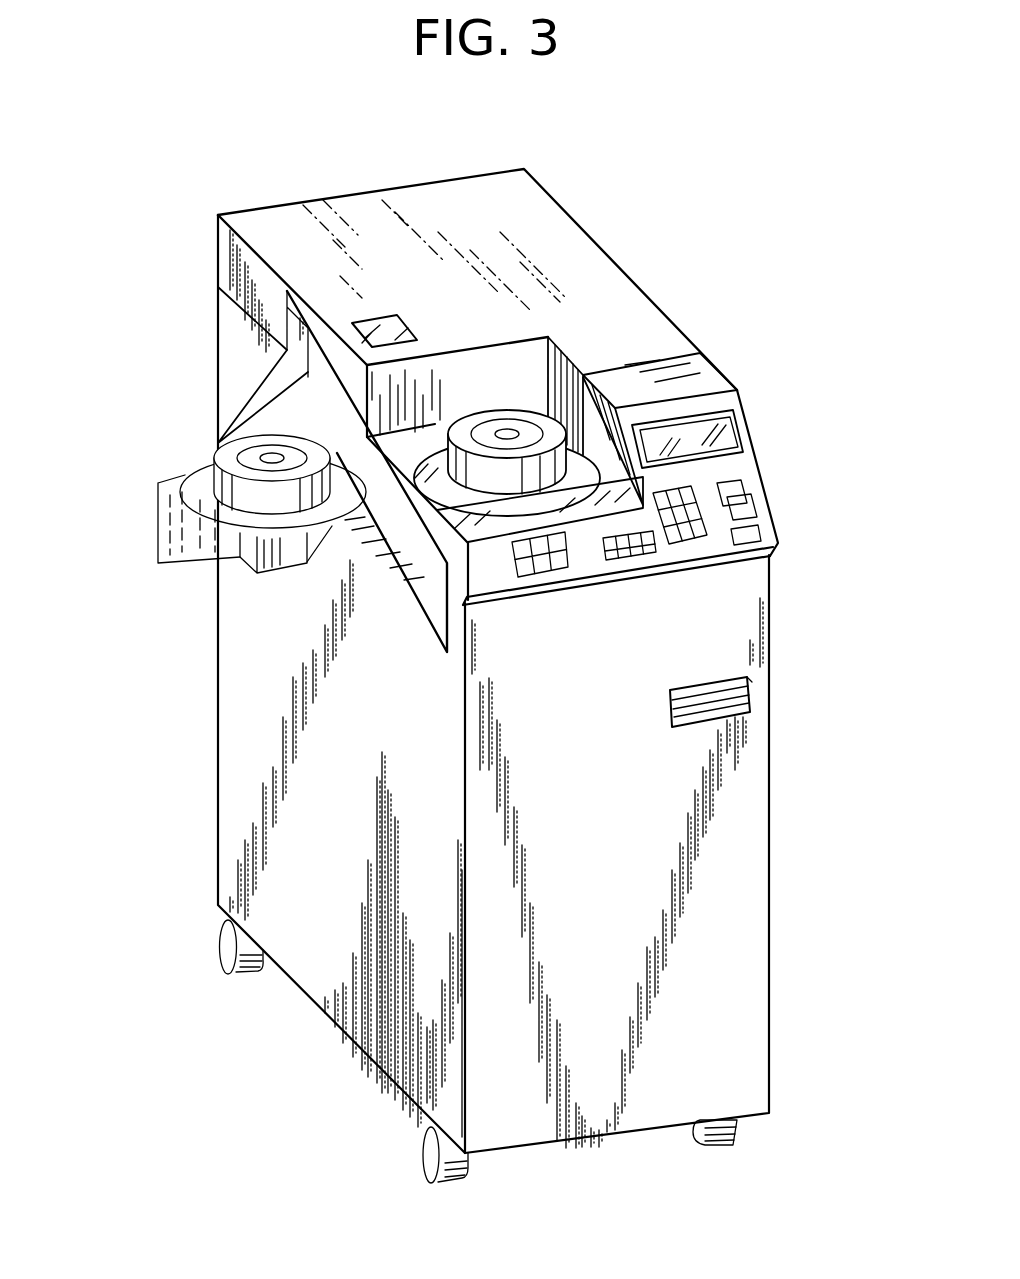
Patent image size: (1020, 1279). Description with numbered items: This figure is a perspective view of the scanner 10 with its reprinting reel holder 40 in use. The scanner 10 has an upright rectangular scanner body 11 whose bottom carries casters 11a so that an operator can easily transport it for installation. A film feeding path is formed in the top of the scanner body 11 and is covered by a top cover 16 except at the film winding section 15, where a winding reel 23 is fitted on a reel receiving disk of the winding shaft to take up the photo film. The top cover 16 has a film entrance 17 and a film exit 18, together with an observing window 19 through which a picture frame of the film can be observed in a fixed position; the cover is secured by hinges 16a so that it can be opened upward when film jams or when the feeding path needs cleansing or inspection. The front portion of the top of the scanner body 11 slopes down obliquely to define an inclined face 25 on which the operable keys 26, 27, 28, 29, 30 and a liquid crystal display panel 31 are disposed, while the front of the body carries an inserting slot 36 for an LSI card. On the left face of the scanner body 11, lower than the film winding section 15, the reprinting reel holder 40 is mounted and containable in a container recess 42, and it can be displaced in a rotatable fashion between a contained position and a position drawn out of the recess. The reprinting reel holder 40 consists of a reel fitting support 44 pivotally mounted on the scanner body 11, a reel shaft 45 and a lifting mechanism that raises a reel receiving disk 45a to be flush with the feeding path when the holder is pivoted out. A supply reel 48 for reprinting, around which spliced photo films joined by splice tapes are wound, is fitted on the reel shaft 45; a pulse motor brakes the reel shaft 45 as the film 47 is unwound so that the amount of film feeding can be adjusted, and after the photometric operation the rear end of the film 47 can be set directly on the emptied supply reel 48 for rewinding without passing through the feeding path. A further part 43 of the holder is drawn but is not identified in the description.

The scanner 10 is at (580, 167).
The scanner body 11 is at (236, 804).
The casters 11a is at (431, 1163).
The film winding section 15 is at (473, 372).
The top cover 16 is at (590, 253).
The hinges 16a is at (218, 287).
The film entrance 17 is at (283, 348).
The film exit 18 is at (577, 373).
The observing window 19 is at (383, 317).
The winding reel 23 is at (506, 432).
The inclined face 25 is at (684, 503).
The operable key 26 is at (545, 568).
The operable key 27 is at (633, 562).
The operable key 28 is at (700, 546).
The operable key 29 is at (753, 493).
The operable key 30 is at (757, 530).
The liquid crystal display panel 31 is at (740, 412).
The inserting slot 36 is at (740, 693).
The reprinting reel holder 40 is at (239, 568).
The container recess 42 is at (430, 610).
The bracket plate 43 is at (178, 563).
The reel fitting support 44 is at (413, 573).
The reel shaft 45 is at (273, 458).
The reel receiving disk 45a is at (190, 498).
The film 47 is at (253, 393).
The supply reel 48 is at (218, 445).